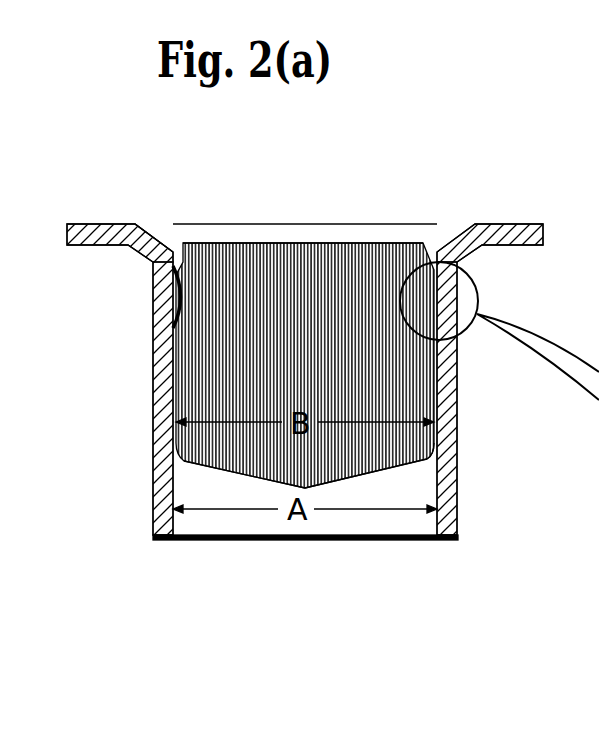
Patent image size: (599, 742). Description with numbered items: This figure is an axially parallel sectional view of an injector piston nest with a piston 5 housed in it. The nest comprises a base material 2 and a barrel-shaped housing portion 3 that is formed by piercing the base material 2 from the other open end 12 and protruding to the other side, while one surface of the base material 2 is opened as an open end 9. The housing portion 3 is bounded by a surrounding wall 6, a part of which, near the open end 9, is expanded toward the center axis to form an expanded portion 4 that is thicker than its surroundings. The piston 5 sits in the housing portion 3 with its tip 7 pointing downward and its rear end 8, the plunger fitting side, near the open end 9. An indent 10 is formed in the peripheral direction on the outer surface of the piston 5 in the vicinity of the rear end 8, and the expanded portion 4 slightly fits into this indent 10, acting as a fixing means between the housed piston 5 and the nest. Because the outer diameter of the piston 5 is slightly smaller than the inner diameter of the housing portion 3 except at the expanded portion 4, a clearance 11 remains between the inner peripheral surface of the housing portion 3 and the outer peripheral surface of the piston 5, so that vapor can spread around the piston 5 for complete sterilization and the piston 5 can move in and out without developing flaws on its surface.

The base material 2 is at (123, 224).
The housing portion 3 is at (146, 439).
The expanded portion 4 is at (180, 297).
The piston 5 is at (280, 262).
The surrounding wall 6 is at (151, 506).
The tip 7 is at (287, 487).
The rear end 8 is at (387, 247).
The open end 9 is at (173, 224).
The indent 10 is at (402, 332).
The clearance 11 is at (433, 450).
The open end 12 is at (412, 540).